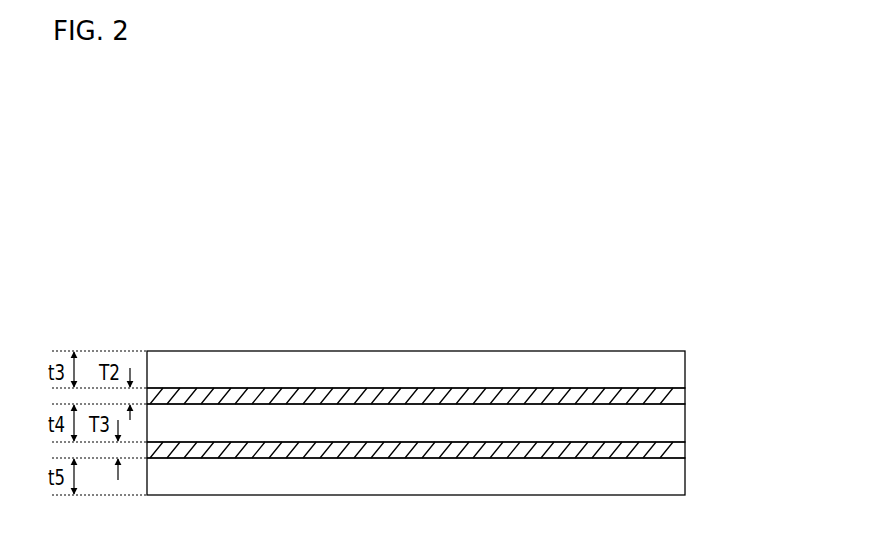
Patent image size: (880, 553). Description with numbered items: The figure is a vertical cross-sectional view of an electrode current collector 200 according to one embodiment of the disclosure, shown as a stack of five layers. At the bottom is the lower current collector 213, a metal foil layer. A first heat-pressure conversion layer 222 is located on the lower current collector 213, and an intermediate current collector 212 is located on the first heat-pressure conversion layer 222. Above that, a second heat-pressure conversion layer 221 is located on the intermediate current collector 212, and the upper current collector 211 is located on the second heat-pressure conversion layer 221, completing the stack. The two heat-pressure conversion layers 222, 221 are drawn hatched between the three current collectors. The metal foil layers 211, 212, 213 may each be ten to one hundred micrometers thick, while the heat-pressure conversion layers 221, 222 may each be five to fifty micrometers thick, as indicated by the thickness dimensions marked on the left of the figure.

The electrode current collector 200 is at (365, 254).
The upper current collector 211 is at (685, 362).
The second heat-pressure conversion layer 221 is at (685, 392).
The intermediate current collector 212 is at (685, 425).
The first heat-pressure conversion layer 222 is at (685, 450).
The lower current collector 213 is at (685, 485).